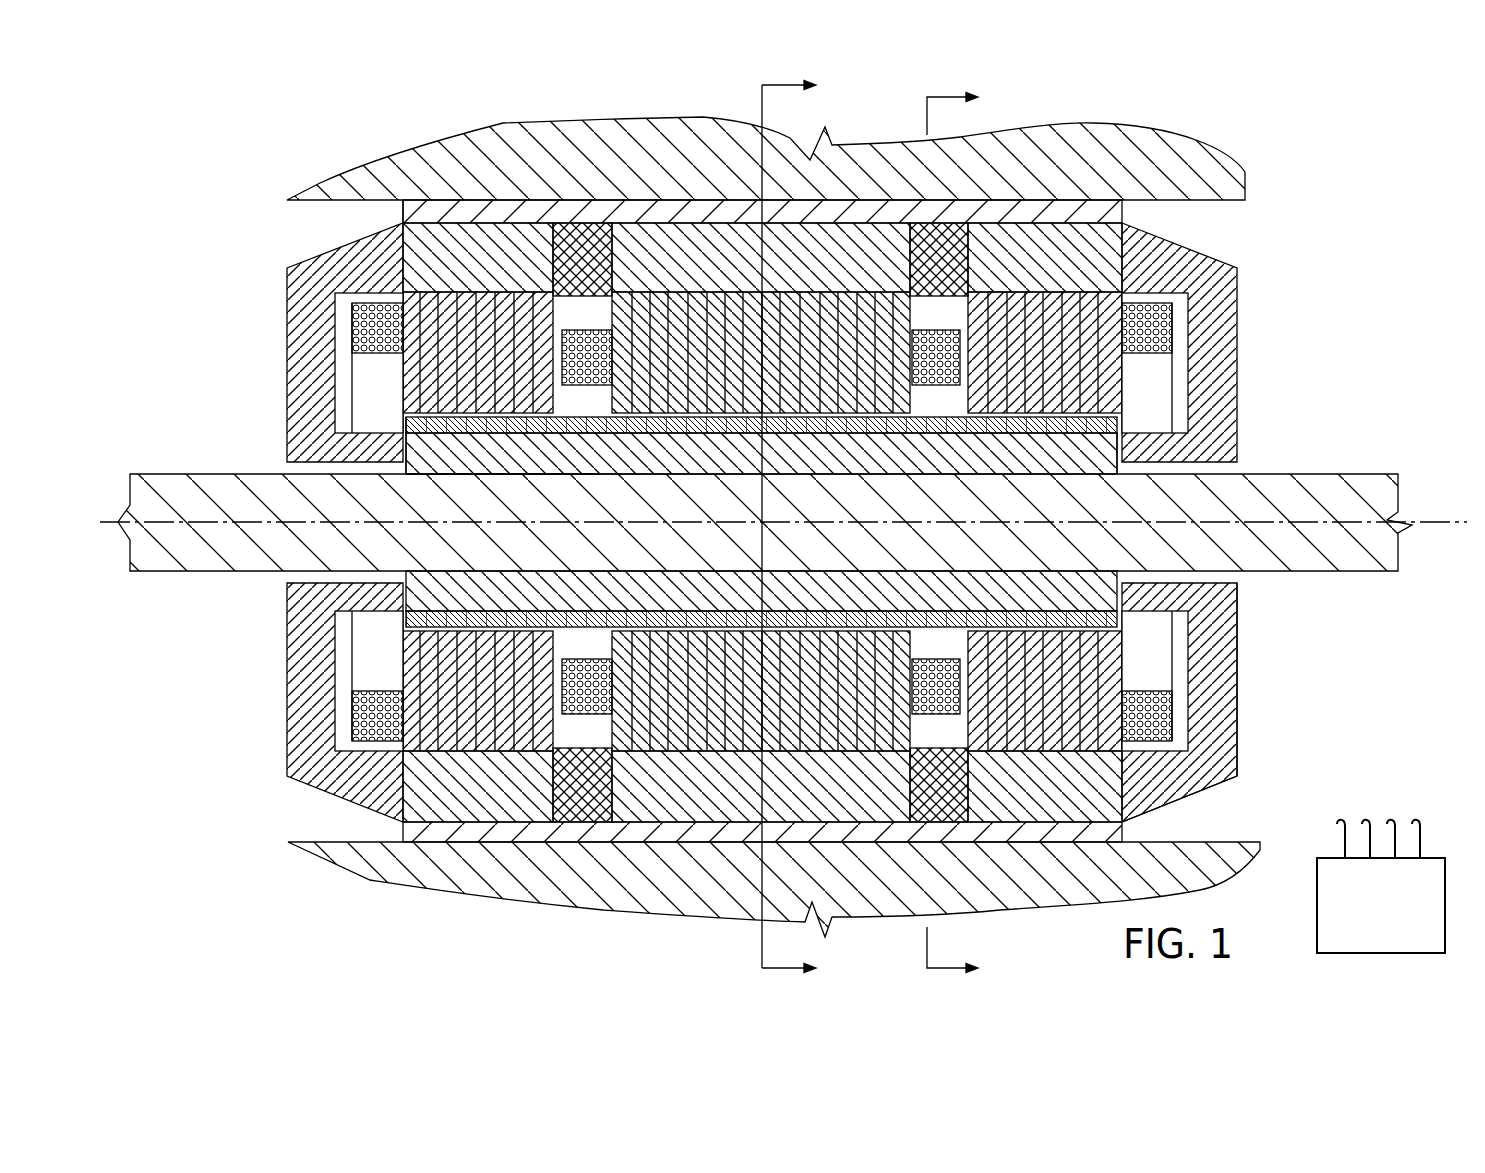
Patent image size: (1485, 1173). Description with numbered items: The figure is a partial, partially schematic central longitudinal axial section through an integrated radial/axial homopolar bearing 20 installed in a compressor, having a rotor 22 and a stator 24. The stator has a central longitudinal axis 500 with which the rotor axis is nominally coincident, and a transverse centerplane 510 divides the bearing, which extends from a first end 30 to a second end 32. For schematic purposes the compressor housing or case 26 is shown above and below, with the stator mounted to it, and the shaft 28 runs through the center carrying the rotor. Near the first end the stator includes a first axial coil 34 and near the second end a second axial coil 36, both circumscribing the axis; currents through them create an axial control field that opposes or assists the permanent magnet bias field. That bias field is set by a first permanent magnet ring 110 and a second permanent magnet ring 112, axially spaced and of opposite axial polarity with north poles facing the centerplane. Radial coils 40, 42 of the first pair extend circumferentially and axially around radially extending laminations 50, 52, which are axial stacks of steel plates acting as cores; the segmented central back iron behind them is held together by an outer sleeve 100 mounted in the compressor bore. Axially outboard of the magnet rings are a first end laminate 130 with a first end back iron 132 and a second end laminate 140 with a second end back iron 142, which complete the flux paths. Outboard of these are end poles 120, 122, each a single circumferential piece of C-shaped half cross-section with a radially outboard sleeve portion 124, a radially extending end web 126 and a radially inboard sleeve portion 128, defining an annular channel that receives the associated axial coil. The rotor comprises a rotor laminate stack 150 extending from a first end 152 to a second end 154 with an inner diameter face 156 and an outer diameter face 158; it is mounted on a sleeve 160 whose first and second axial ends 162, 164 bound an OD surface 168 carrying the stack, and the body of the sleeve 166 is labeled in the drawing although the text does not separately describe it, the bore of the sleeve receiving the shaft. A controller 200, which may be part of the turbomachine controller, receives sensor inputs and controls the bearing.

The integrated radial/axial homopolar bearing 20 is at (1275, 770).
The rotor 22 is at (741, 364).
The stator 24 is at (1238, 706).
The housing 26 is at (1112, 140).
The shaft 28 is at (1374, 557).
The first end 30 is at (1366, 307).
The second end 32 is at (226, 710).
The first axial coil 34 is at (1153, 300).
The second axial coil 36 is at (340, 329).
The radial coil 40 is at (762, 227).
The radial coil 42 is at (762, 816).
The lamination 50 is at (736, 238).
The lamination 52 is at (762, 759).
The outer sleeve 100 is at (460, 827).
The first permanent magnet ring 110 is at (953, 840).
The second permanent magnet ring 112 is at (577, 797).
The end pole 120 is at (1238, 706).
The end pole 122 is at (320, 260).
The radially outboard sleeve portion 124 is at (1178, 777).
The radially extending end web 126 is at (1218, 697).
The radially inboard sleeve portion 128 is at (1180, 605).
The first end laminate 130 is at (1057, 310).
The first end back iron 132 is at (1037, 228).
The second end laminate 140 is at (402, 222).
The second end back iron 142 is at (857, 252).
The rotor laminate stack 150 is at (401, 623).
The first end 152 is at (1118, 425).
The second end 154 is at (403, 428).
The inner diameter face 156 is at (425, 482).
The outer diameter face 158 is at (430, 300).
The sleeve 160 is at (406, 467).
The first axial end 162 is at (1120, 445).
The second axial end 164 is at (407, 457).
The rotor core 166 is at (540, 476).
The OD surface 168 is at (648, 624).
The controller 200 is at (1366, 928).
The central longitudinal axis 500 is at (783, 463).
The transverse centerplane 510 is at (748, 160).